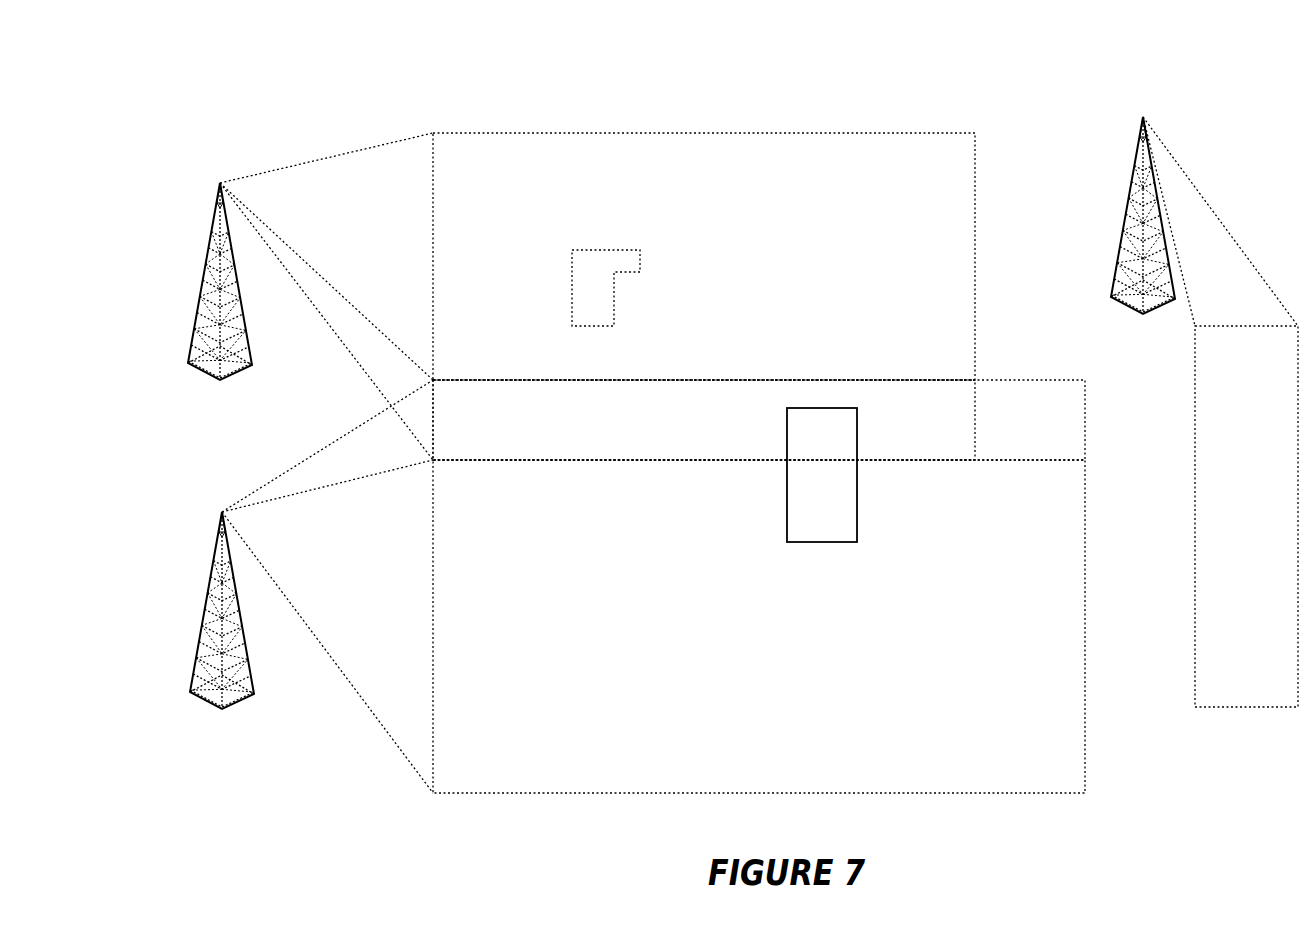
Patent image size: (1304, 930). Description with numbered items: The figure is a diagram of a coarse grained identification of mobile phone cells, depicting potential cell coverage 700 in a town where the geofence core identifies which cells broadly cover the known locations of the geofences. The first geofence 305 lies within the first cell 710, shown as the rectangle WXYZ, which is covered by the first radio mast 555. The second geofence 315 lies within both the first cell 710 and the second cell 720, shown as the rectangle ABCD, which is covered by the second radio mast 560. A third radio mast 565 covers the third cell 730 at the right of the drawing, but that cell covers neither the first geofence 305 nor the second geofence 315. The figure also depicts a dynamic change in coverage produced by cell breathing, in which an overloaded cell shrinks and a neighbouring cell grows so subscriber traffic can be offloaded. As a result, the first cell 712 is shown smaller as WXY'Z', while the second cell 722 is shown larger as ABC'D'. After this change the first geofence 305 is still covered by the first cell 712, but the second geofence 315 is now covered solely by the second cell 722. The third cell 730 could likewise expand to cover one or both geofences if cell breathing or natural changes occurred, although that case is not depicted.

The cell coverage 700 is at (203, 162).
The first radio mast 555 is at (186, 365).
The second radio mast 560 is at (189, 692).
The third radio mast 565 is at (1124, 210).
The first cell 712 is at (975, 247).
The first cell 710 is at (975, 402).
The second cell 722 is at (1085, 431).
The second cell 720 is at (1085, 578).
The third cell 730 is at (1246, 707).
The first geofence 305 is at (640, 272).
The second geofence 315 is at (786, 483).